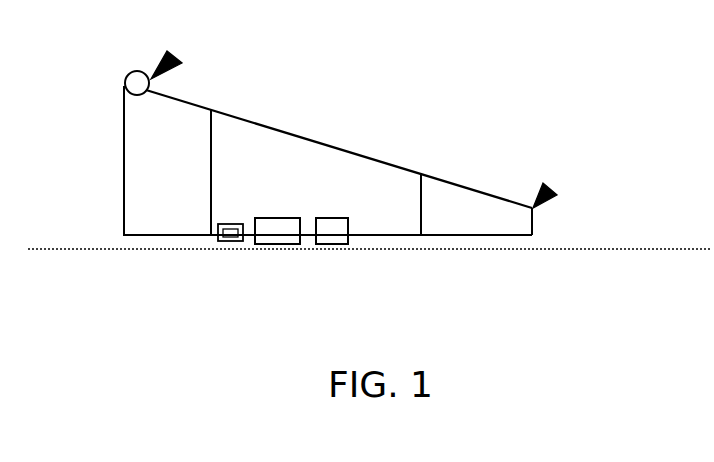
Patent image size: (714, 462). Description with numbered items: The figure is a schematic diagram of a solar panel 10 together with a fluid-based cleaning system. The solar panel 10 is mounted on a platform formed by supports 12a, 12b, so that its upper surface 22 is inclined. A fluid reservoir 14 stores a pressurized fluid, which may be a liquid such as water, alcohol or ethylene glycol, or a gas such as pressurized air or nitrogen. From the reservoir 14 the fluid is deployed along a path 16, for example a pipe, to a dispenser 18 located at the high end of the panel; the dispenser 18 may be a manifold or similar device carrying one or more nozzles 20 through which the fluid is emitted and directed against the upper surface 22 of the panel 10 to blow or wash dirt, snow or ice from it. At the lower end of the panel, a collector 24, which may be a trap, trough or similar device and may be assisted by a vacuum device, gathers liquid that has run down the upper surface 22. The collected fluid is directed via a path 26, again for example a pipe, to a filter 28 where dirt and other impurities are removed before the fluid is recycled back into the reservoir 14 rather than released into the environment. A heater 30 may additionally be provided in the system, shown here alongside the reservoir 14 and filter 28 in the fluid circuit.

The solar panel 10 is at (315, 139).
The support 12a is at (213, 165).
The support 12b is at (419, 192).
The fluid reservoir 14 is at (275, 245).
The path 16 is at (123, 165).
The dispenser 18 is at (132, 71).
The nozzle 20 is at (176, 54).
The upper surface 22 is at (480, 186).
The collector 24 is at (550, 190).
The path 26 is at (458, 222).
The filter 28 is at (330, 245).
The heater 30 is at (226, 244).